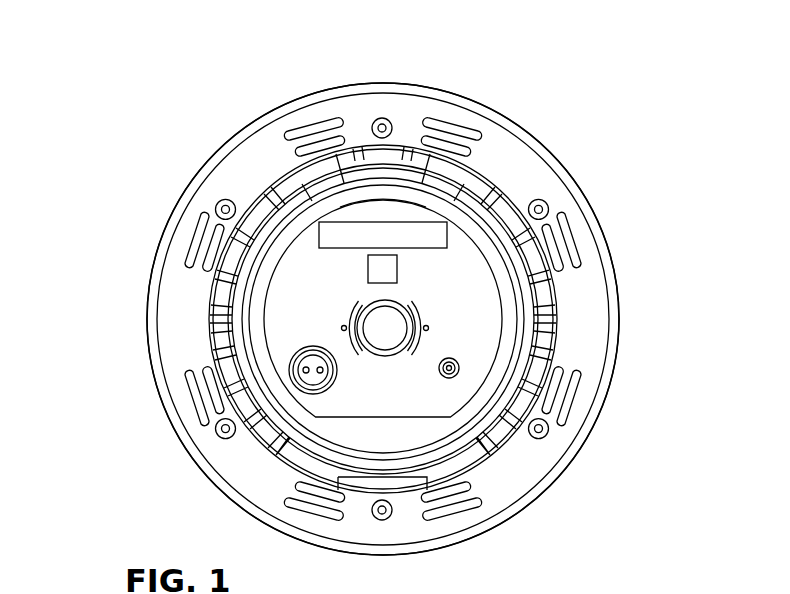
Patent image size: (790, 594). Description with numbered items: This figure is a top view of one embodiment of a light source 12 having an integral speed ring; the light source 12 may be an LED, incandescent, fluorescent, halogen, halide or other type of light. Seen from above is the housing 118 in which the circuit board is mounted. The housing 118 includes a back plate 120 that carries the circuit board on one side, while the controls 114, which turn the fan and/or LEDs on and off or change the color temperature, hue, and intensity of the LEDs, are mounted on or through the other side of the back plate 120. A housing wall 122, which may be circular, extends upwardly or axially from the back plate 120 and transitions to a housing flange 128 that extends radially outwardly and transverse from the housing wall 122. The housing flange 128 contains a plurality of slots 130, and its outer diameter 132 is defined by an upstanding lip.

The light source 12 is at (517, 121).
The controls 114 is at (392, 306).
The housing 118 is at (562, 167).
The back plate 120 is at (488, 306).
The housing wall 122 is at (553, 331).
The housing flange 128 is at (560, 442).
The slots 130 is at (565, 241).
The outer diameter 132 is at (148, 311).